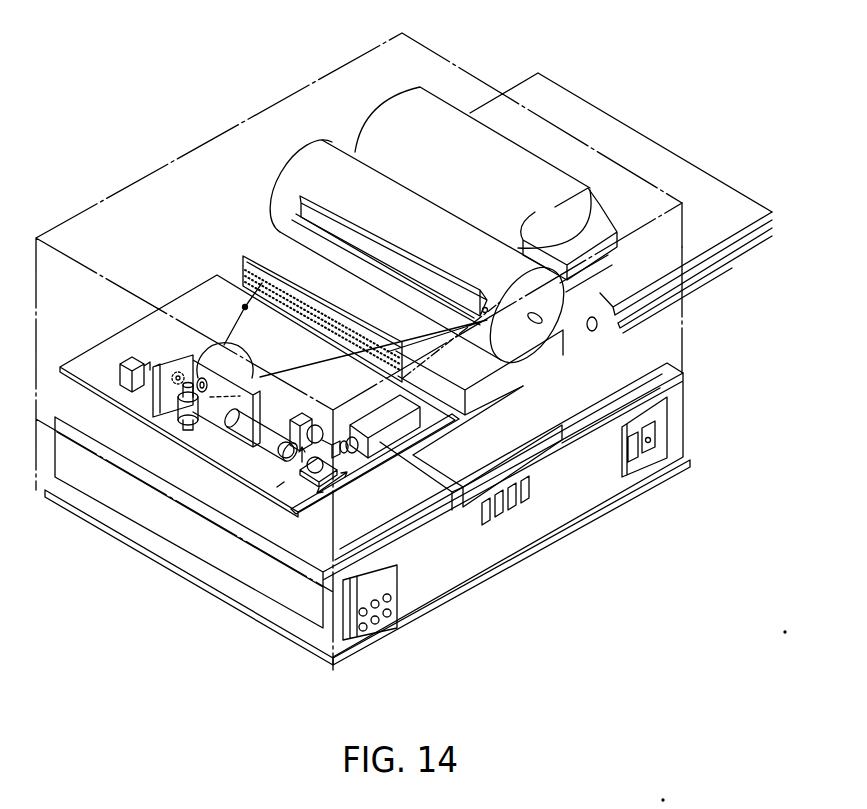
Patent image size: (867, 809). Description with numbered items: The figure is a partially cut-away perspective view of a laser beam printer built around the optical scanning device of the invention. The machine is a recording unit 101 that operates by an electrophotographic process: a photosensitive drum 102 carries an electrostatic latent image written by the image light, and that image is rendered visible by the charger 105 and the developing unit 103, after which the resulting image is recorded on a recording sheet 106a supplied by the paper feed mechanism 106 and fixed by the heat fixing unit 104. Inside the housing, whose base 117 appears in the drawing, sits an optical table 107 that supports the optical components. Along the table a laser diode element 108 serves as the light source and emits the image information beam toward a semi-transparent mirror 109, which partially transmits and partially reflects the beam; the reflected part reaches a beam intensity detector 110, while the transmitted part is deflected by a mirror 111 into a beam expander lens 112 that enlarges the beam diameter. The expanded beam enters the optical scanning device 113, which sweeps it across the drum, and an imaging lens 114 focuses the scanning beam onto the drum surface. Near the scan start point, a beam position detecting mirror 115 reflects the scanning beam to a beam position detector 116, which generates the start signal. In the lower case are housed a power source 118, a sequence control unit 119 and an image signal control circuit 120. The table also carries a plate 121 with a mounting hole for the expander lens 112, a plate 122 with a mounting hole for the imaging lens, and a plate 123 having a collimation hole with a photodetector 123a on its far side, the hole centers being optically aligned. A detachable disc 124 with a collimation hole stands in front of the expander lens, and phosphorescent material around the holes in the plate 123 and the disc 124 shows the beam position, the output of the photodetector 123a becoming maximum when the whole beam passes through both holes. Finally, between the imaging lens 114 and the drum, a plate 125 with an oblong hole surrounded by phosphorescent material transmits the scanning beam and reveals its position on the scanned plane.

The recording unit 101 is at (464, 37).
The photosensitive drum 102 is at (326, 148).
The developing unit 103 is at (537, 365).
The heat fixing unit 104 is at (587, 208).
The charger 105 is at (312, 195).
The paper feed mechanism 106 is at (590, 333).
The recording sheet 106a is at (420, 108).
The optical table 107 is at (285, 447).
The laser diode element 108 is at (420, 430).
The semi-transparent mirror 109 is at (370, 470).
The beam intensity detector 110 is at (290, 420).
The mirror 111 is at (287, 455).
The beam expander lens 112 is at (267, 442).
The optical scanning device 113 is at (167, 422).
The imaging lens 114 is at (223, 360).
The beam position detecting mirror 115 is at (245, 307).
The beam position detector 116 is at (120, 372).
The base 117 is at (734, 414).
The power source 118 is at (387, 527).
The sequence control unit 119 is at (523, 443).
The image signal control circuit 120 is at (578, 408).
The plate 121 is at (200, 447).
The plate 122 is at (267, 382).
The plate 123 is at (150, 403).
The photodetector 123a is at (163, 370).
The disc 124 is at (277, 487).
The plate 125 is at (250, 253).